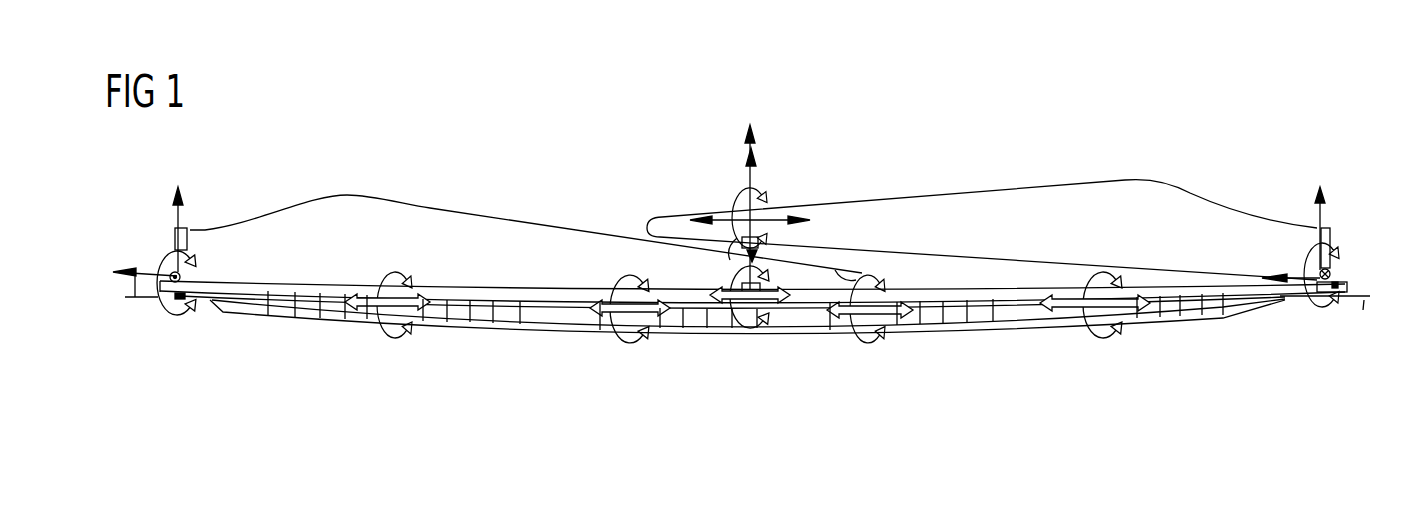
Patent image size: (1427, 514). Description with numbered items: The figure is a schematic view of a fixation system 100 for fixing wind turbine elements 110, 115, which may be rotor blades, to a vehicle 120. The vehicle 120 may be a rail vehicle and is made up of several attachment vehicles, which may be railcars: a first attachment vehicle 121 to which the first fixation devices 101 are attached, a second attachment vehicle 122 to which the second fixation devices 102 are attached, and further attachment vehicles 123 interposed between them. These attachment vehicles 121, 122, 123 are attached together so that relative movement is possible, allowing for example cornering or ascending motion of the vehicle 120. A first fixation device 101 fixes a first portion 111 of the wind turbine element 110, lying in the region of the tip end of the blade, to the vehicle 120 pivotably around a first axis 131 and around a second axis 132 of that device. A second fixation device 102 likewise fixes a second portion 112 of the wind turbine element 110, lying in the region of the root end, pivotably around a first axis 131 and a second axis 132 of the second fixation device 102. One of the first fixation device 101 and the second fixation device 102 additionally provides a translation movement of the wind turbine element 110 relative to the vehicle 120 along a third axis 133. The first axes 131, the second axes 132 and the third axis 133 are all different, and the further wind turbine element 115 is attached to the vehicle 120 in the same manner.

The fixation system 100 is at (276, 156).
The first fixation device 101 is at (743, 284).
The second fixation device 102 is at (168, 263).
The wind turbine element 110 is at (1070, 201).
The first portion 111 is at (657, 228).
The second portion 112 is at (183, 233).
The further wind turbine element 115 is at (432, 222).
The vehicle 120 is at (370, 366).
The first attachment vehicle 121 is at (786, 320).
The second attachment vehicle 122 is at (285, 316).
The further attachment vehicle 123 is at (531, 322).
The first axis 131 is at (175, 211).
The second axis 132 is at (190, 305).
The third axis 133 is at (131, 298).